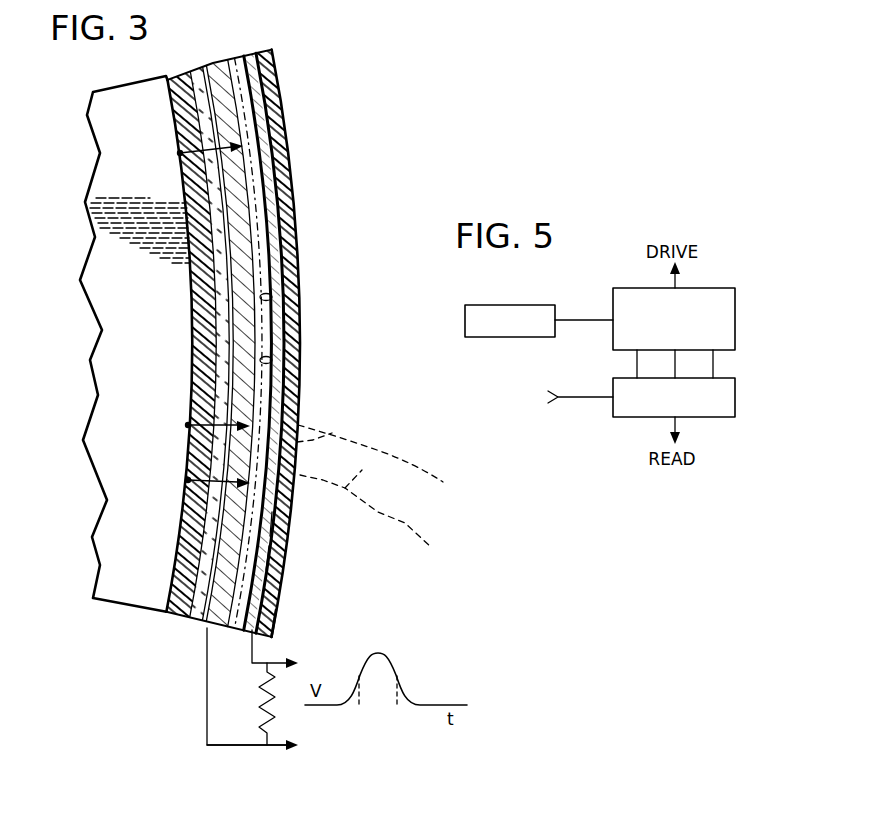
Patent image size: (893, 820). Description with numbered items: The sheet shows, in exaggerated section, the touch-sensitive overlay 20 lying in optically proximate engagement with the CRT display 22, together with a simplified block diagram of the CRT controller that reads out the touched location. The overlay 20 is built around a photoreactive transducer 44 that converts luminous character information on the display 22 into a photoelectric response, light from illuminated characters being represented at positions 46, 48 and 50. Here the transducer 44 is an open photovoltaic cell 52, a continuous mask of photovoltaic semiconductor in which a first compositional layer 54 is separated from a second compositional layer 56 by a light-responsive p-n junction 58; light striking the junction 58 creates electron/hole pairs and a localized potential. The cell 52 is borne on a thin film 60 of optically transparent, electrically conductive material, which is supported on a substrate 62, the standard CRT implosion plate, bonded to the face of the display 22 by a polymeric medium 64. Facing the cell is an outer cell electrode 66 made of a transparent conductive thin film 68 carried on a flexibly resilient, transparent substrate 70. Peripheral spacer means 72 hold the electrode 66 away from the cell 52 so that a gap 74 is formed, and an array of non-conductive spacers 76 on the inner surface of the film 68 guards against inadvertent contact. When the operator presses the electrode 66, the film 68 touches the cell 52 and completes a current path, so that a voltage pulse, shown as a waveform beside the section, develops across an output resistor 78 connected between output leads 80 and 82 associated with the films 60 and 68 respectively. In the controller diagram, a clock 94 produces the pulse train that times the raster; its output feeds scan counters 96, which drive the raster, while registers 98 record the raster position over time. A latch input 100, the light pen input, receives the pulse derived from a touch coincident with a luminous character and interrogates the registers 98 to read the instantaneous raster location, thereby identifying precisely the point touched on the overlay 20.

In FIG. 3, the touch-sensitive overlay 20 is at (259, 331).
In FIG. 3, the CRT display 22 is at (125, 139).
In FIG. 3, the photoreactive transducer 44 is at (251, 331).
In FIG. 3, the position of luminous character 46 is at (180, 153).
In FIG. 3, the position of luminous character 48 is at (188, 425).
In FIG. 3, the position of luminous character 50 is at (188, 480).
In FIG. 3, the open photovoltaic cell 52 is at (212, 632).
In FIG. 3, the first compositional layer 54 is at (277, 558).
In FIG. 3, the second compositional layer 56 is at (277, 524).
In FIG. 3, the junction 58 is at (277, 621).
In FIG. 3, the thin film 60 is at (195, 623).
In FIG. 3, the substrate 62 is at (200, 66).
In FIG. 3, the polymeric medium 64 is at (184, 76).
In FIG. 3, the outer cell electrode 66 is at (296, 114).
In FIG. 3, the thin film 68 is at (263, 91).
In FIG. 3, the flexibly resilient substrate 70 is at (284, 143).
In FIG. 3, the peripheral spacer means 72 is at (247, 56).
In FIG. 3, the gap 74 is at (264, 213).
In FIG. 3, the non-conductive spacers 76 is at (271, 296).
In FIG. 3, the output resistor 78 is at (282, 712).
In FIG. 3, the output lead 80 is at (232, 748).
In FIG. 3, the output lead 82 is at (262, 661).
In FIG. 5, the clock 94 is at (512, 305).
In FIG. 5, the scan counters 96 is at (730, 311).
In FIG. 5, the registers 98 is at (734, 401).
In FIG. 5, the latch input 100 is at (583, 398).